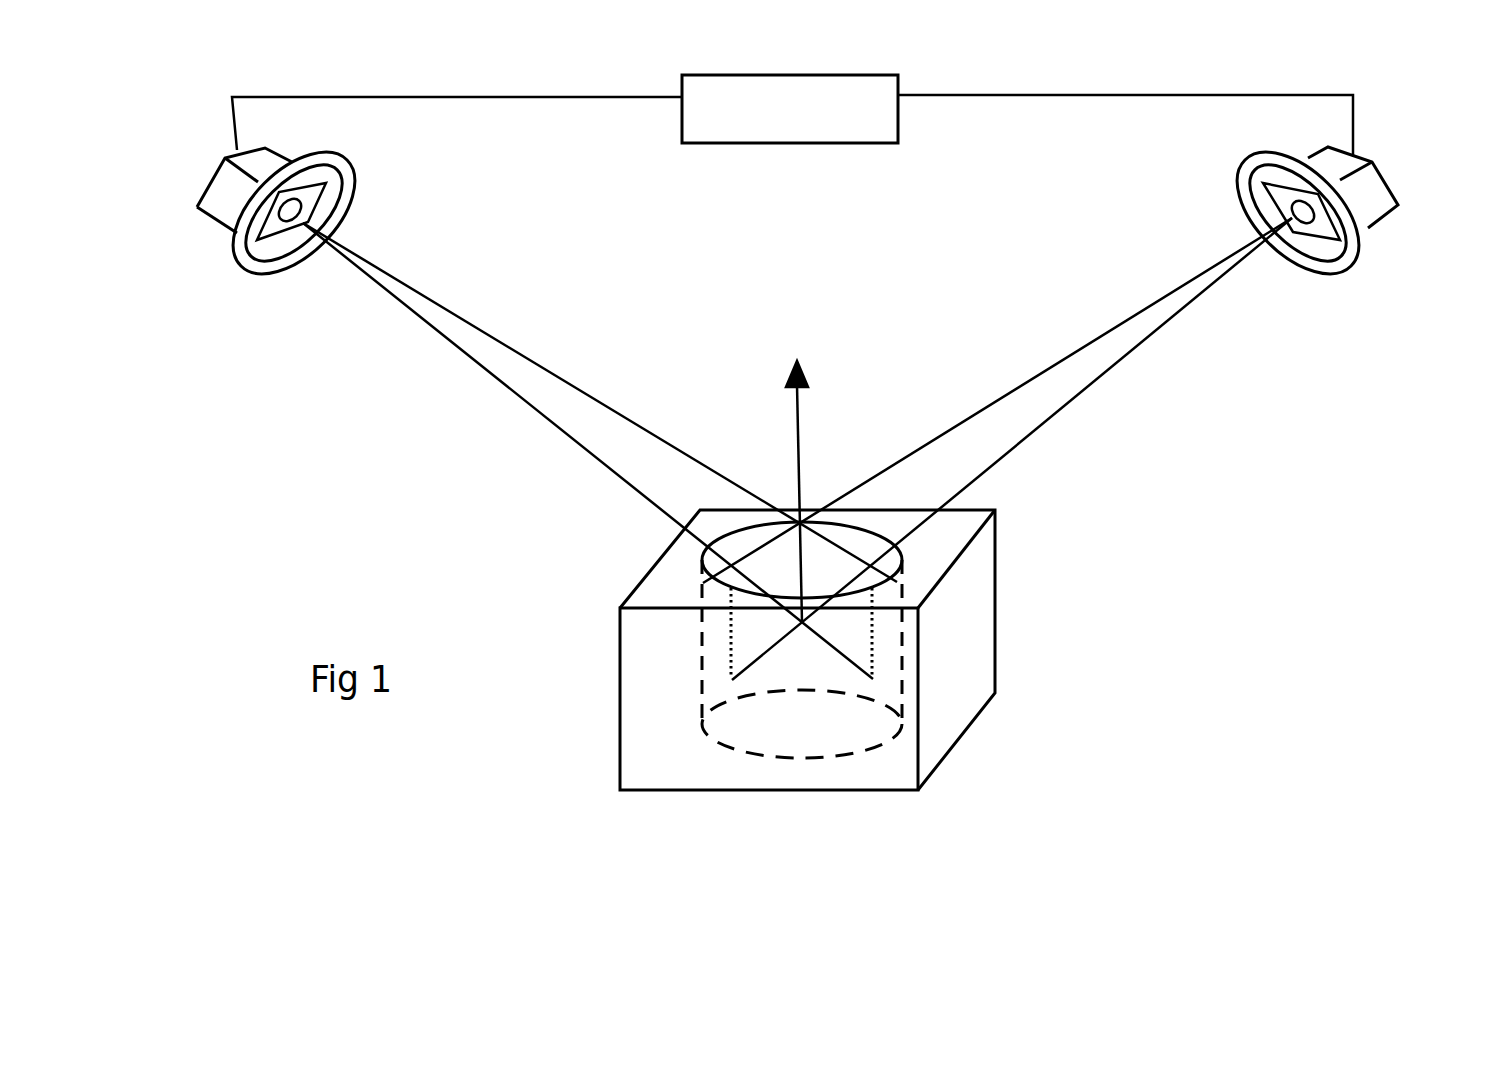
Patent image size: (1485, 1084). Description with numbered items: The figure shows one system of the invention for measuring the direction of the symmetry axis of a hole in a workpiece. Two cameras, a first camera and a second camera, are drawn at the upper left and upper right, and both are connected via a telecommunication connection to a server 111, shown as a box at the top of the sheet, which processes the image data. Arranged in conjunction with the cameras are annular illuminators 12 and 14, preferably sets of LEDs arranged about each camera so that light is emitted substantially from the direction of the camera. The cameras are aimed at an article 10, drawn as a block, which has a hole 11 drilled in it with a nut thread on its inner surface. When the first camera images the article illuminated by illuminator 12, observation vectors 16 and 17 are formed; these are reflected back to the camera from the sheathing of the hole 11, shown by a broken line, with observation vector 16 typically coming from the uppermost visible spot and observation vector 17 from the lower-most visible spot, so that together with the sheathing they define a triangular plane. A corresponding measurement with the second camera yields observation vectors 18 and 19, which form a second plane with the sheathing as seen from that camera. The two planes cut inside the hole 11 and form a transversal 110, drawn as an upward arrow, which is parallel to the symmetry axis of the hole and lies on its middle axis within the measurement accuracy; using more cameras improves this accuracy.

The article 10 is at (809, 654).
The hole 11 is at (783, 640).
The annular illuminator 12 is at (259, 212).
The annular illuminator 14 is at (1321, 212).
The observation vector 16 is at (600, 402).
The observation vector 17 is at (588, 451).
The observation vector 18 is at (1012, 449).
The observation vector 19 is at (997, 400).
The transversal 110 is at (820, 491).
The server 111 is at (792, 115).